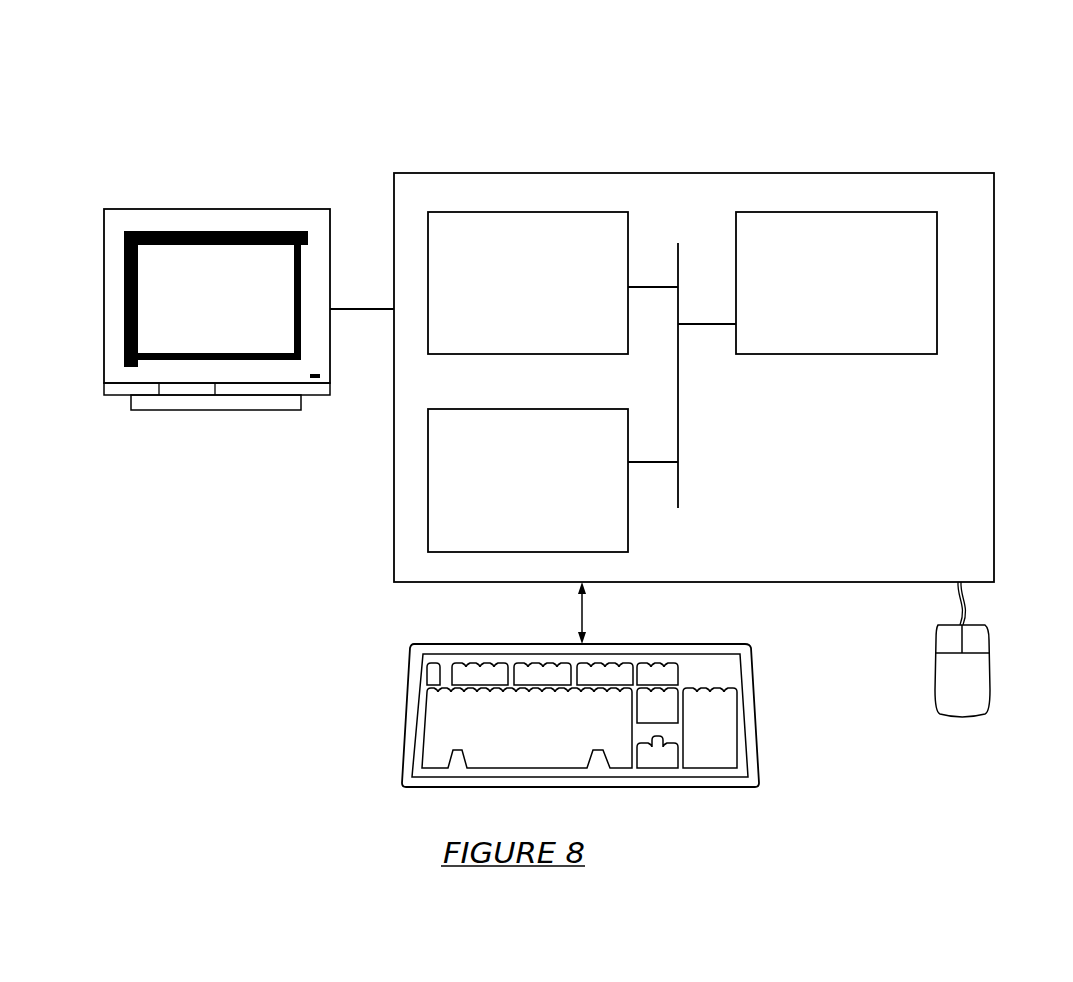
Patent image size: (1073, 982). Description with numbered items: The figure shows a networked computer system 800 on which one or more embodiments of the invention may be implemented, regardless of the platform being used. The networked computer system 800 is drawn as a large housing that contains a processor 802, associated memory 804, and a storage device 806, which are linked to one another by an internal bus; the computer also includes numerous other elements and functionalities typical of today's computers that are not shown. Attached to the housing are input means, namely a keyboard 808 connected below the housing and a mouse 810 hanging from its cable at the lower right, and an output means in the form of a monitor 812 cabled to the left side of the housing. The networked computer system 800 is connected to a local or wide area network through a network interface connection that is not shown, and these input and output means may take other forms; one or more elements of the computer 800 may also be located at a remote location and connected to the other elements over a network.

The networked computer system 800 is at (884, 62).
The processor 802 is at (833, 293).
The associated memory 804 is at (511, 293).
The storage device 806 is at (507, 491).
The keyboard 808 is at (502, 751).
The mouse 810 is at (943, 691).
The monitor 812 is at (196, 309).